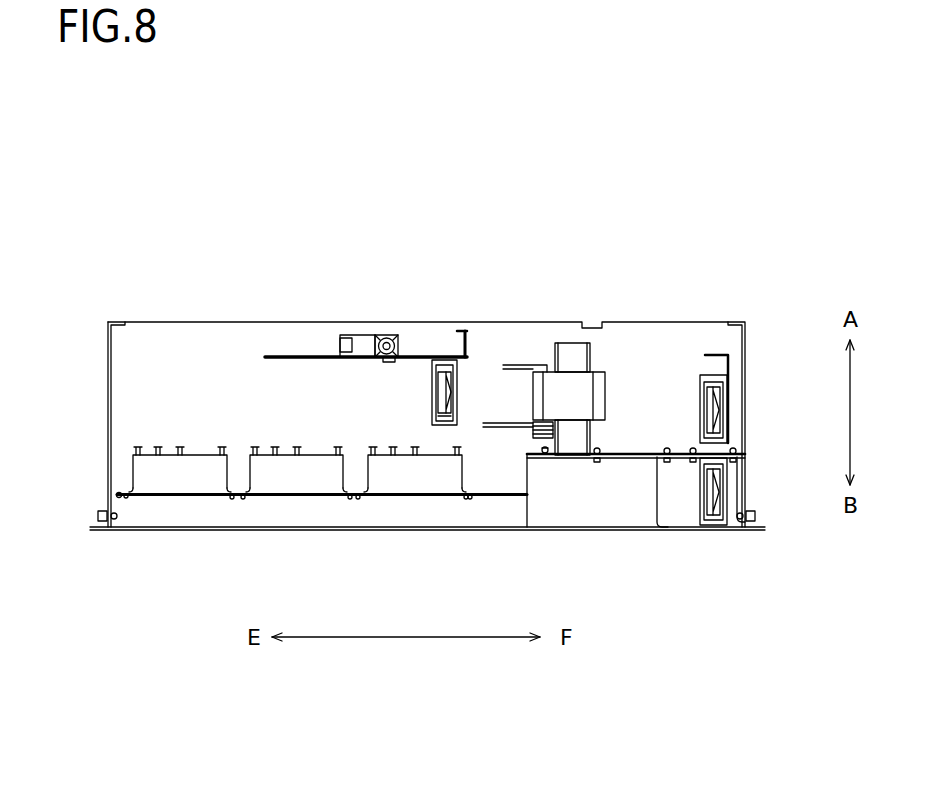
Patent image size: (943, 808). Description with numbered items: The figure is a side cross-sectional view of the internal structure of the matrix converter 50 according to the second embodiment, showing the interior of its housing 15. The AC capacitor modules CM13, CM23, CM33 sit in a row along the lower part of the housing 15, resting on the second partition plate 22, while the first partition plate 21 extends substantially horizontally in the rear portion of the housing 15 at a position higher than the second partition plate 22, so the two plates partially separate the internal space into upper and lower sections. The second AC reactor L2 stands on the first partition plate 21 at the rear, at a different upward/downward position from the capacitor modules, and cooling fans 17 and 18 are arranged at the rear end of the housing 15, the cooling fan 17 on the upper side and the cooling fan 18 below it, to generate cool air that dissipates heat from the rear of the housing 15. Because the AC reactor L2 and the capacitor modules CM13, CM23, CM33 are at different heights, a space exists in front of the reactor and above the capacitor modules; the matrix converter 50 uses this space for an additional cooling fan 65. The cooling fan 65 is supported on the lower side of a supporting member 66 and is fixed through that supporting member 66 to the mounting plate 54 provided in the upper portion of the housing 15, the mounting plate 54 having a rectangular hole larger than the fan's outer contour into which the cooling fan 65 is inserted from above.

The matrix converter 50 is at (197, 158).
The housing 15 is at (747, 347).
The cooling fan 17 is at (720, 408).
The cooling fan 18 is at (720, 490).
The first partition plate 21 is at (620, 458).
The second partition plate 22 is at (500, 497).
The mounting plate 54 is at (285, 355).
The cooling fan 65 is at (460, 387).
The supporting member 66 is at (467, 342).
The second AC reactor L2 is at (585, 388).
The AC capacitor module CM13 is at (167, 488).
The AC capacitor module CM23 is at (290, 480).
The AC capacitor module CM33 is at (408, 480).